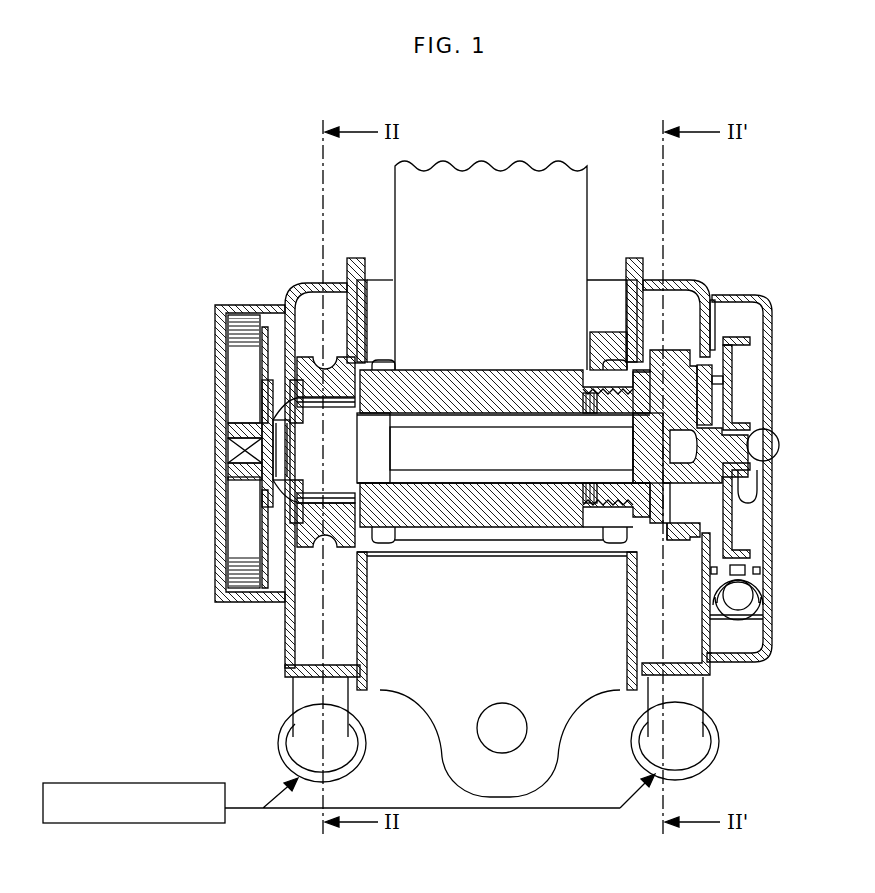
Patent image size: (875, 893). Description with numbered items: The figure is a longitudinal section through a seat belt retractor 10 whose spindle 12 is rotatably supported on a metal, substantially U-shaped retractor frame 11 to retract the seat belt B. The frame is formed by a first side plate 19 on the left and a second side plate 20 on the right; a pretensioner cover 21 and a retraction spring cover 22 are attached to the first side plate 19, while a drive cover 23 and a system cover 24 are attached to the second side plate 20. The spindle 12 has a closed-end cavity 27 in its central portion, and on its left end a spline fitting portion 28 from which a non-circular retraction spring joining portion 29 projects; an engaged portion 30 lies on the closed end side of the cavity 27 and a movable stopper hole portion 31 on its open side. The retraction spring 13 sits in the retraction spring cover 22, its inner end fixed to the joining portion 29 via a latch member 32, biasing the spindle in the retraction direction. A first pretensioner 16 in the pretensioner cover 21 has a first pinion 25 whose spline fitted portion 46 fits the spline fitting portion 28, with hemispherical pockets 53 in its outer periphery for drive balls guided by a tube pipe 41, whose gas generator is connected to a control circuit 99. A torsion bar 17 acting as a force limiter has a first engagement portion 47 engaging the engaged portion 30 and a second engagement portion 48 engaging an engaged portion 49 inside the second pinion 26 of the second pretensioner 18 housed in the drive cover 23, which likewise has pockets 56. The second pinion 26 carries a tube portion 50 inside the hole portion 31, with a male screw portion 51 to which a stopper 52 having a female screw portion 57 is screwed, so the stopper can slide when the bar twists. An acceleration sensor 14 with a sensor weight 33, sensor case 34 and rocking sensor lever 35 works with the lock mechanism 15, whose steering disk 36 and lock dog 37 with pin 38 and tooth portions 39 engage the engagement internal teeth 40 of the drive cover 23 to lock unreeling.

The seat belt retractor 10 is at (774, 130).
The retractor frame 11 is at (440, 760).
The spindle 12 is at (453, 370).
The retraction spring 13 is at (240, 340).
The acceleration sensor 14 is at (754, 595).
The lock mechanism 15 is at (763, 330).
The first pretensioner 16 is at (306, 330).
The torsion bar 17 is at (485, 470).
The second pretensioner 18 is at (689, 328).
The first side plate 19 is at (372, 690).
The second side plate 20 is at (618, 688).
The pretensioner cover 21 is at (340, 282).
The retraction spring cover 22 is at (248, 302).
The drive cover 23 is at (640, 268).
The system cover 24 is at (737, 293).
The first pinion 25 is at (297, 525).
The second pinion 26 is at (740, 508).
The closed-end cavity 27 is at (441, 480).
The spline fitting portion 28 is at (290, 392).
The retraction spring joining portion 29 is at (233, 455).
The engaged portion 30 is at (390, 553).
The movable stopper hole portion 31 is at (612, 505).
The latch member 32 is at (227, 470).
The sensor weight 33 is at (763, 615).
The sensor case 34 is at (750, 638).
The sensor lever 35 is at (760, 570).
The steering disk 36 is at (760, 410).
The lock dog 37 is at (733, 397).
The pin 38 is at (733, 377).
The tooth portions 39 is at (745, 350).
The engagement internal teeth 40 is at (712, 298).
The tube pipe 41 is at (303, 742).
The spline fitted portion 46 is at (327, 513).
The first engagement portion 47 is at (408, 373).
The second engagement portion 48 is at (655, 480).
The engaged portion 49 is at (652, 363).
The tube portion 50 is at (617, 427).
The male screw portion 51 is at (600, 360).
The stopper 52 is at (592, 392).
The hemispherical pockets 53 is at (337, 357).
The hemispherical pockets 56 is at (678, 525).
The female screw portion 57 is at (585, 398).
The control circuit 99 is at (177, 783).
The seat belt B is at (590, 172).